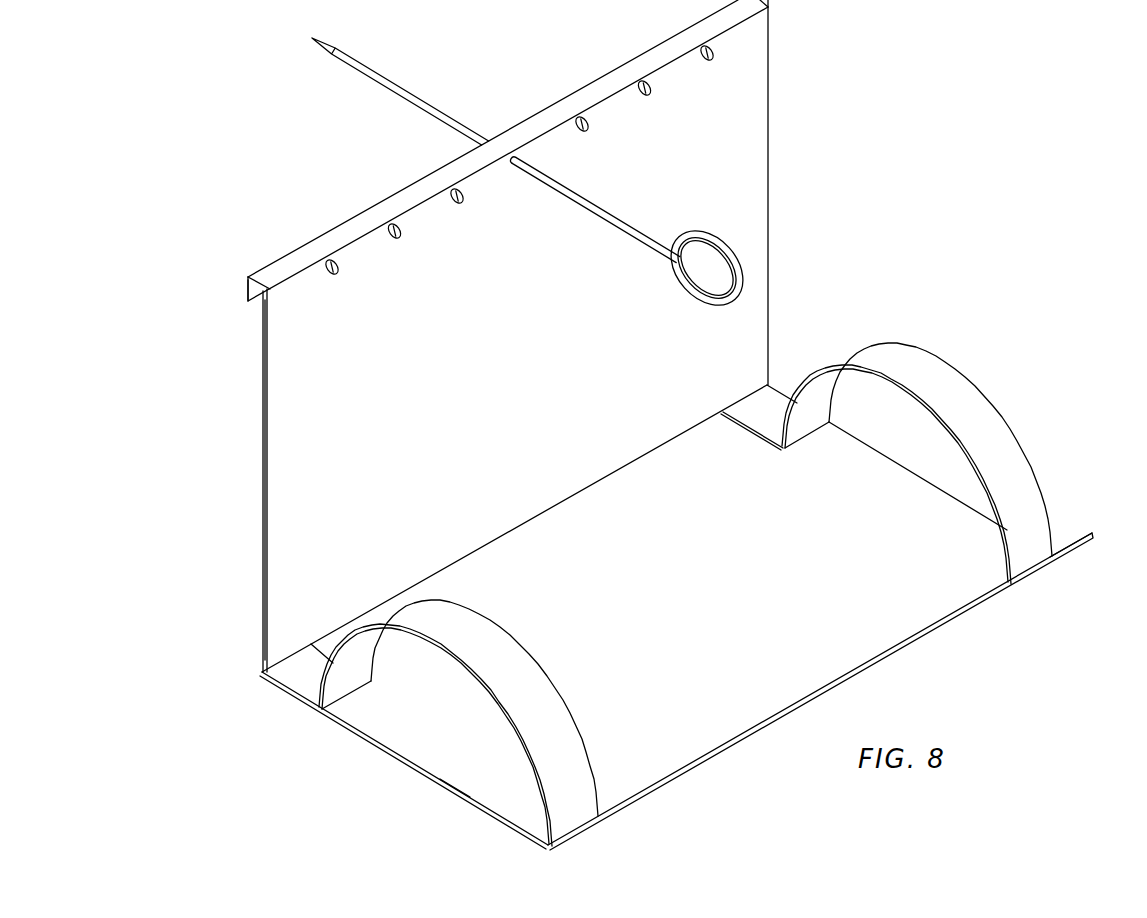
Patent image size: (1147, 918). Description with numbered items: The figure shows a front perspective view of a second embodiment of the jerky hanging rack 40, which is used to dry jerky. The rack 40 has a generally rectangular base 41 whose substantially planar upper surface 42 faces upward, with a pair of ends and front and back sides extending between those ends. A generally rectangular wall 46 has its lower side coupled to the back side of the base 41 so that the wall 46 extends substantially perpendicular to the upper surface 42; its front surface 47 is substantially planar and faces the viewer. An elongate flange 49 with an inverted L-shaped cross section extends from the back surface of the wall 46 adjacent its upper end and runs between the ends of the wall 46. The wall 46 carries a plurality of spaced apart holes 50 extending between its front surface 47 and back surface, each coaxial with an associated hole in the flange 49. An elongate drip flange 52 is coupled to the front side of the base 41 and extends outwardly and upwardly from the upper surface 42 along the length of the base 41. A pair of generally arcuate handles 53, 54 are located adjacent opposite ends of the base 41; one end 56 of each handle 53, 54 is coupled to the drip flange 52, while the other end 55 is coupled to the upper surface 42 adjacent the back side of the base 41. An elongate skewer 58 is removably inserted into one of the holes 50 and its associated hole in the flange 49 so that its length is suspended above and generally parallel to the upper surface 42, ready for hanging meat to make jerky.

The second embodiment of the jerky hanging rack 40 is at (210, 231).
The base 41 is at (388, 758).
The upper surface of the base 42 is at (462, 772).
The wall 46 is at (250, 487).
The front surface of the wall 47 is at (283, 562).
The flange 49 is at (247, 297).
The holes 50 is at (343, 258).
The drip flange 52 is at (782, 720).
The handle 53 is at (408, 636).
The handle 54 is at (978, 384).
The end of handle 55 is at (770, 400).
The end of handle 56 is at (1070, 546).
The skewer 58 is at (422, 97).